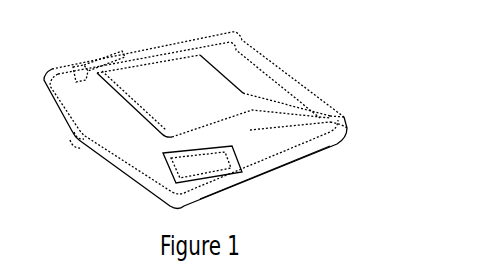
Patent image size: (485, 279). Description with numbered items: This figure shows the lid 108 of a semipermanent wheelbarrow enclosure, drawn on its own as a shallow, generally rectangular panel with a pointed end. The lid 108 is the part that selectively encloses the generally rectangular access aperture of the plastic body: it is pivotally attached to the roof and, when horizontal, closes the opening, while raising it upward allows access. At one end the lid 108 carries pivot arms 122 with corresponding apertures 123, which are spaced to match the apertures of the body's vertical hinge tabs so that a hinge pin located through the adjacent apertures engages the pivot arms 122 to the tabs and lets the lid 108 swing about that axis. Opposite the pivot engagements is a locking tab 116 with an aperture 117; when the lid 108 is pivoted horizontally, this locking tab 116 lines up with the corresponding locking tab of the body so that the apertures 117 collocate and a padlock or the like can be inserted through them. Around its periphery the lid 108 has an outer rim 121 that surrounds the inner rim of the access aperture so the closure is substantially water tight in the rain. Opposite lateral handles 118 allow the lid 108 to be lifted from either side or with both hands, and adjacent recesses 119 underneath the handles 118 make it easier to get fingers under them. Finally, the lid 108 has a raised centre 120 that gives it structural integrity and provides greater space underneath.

The lid 108 is at (329, 55).
The locking tab 116 is at (72, 146).
The aperture 117 is at (77, 138).
The lateral handles 118 is at (112, 54).
The recesses 119 is at (86, 71).
The raised centre 120 is at (240, 92).
The outer rim 121 is at (286, 166).
The pivot arms 122 is at (349, 128).
The apertures 123 is at (351, 114).